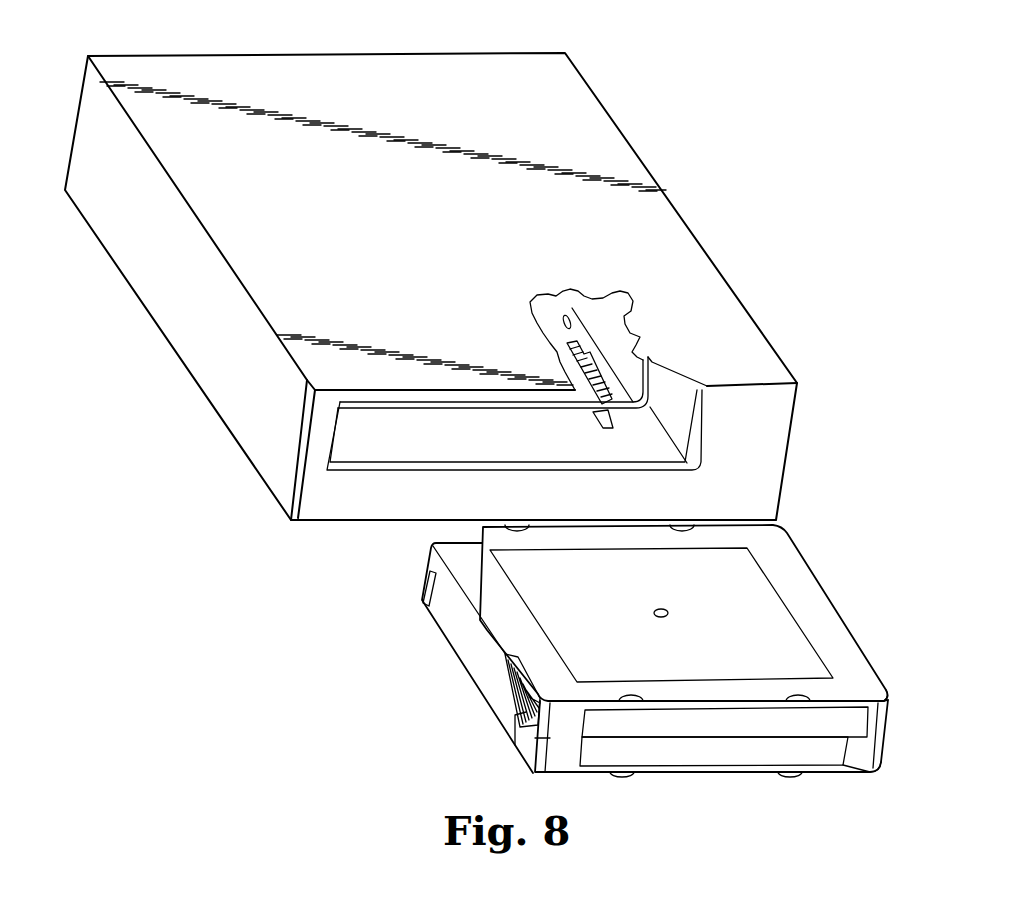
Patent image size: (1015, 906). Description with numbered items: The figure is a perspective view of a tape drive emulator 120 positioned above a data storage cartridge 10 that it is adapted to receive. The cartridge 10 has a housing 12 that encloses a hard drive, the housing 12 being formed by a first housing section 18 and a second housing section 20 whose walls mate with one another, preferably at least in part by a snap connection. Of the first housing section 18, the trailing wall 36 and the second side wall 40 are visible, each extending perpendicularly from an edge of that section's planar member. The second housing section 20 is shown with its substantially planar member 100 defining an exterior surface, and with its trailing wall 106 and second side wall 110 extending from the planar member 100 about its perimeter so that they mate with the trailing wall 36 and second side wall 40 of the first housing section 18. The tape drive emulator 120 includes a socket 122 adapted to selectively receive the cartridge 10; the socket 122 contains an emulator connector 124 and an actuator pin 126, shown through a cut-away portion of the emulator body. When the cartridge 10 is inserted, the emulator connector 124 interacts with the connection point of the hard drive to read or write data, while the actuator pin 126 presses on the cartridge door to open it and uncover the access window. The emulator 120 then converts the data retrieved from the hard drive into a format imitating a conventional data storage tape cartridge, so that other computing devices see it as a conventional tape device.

The data storage cartridge 10 is at (895, 601).
The housing 12 is at (895, 636).
The first housing section 18 is at (866, 766).
The second housing section 20 is at (871, 680).
The trailing wall 36 is at (867, 748).
The second side wall 40 is at (468, 658).
The planar member 100 is at (795, 573).
The trailing wall 106 is at (875, 725).
The second side wall 110 is at (488, 642).
The tape drive emulator 120 is at (773, 260).
The socket 122 is at (670, 420).
The emulator connector 124 is at (597, 380).
The actuator pin 126 is at (573, 327).